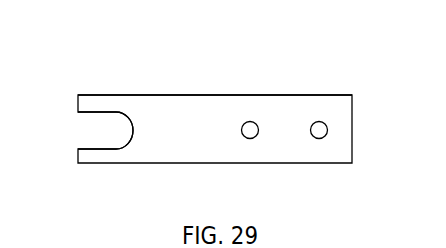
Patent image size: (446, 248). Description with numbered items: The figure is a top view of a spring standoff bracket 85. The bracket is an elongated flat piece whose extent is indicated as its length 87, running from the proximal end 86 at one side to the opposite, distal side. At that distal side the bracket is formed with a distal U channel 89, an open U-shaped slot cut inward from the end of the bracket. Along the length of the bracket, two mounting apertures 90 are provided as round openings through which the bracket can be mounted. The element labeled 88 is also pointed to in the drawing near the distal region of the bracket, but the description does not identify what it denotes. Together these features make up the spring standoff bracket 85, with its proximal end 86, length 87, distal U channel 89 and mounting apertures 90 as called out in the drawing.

The spring standoff bracket 85 is at (200, 164).
The proximal end 86 is at (323, 95).
The length 87 is at (219, 95).
The second end 88 is at (113, 95).
The distal U channel 89 is at (122, 130).
The mounting apertures 90 is at (256, 136).